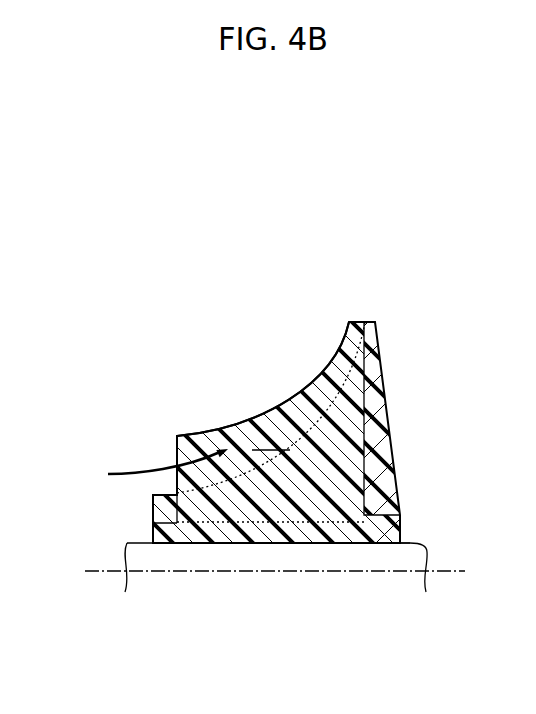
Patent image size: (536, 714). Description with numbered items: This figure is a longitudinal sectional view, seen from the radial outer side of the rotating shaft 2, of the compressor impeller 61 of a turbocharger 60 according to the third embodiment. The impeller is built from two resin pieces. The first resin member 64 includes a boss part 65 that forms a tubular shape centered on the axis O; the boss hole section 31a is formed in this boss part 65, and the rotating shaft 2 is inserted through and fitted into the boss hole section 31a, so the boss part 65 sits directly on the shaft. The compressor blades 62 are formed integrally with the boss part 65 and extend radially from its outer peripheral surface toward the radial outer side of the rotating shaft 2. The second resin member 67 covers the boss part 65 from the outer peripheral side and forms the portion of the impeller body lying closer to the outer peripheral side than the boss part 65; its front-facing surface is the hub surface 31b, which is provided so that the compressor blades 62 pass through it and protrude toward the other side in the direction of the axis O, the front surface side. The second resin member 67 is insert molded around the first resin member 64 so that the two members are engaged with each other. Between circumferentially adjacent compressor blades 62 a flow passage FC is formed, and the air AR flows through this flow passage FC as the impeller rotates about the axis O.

The turbocharger 60 is at (332, 265).
The compressor impeller 61 is at (279, 342).
The compressor blades 62 is at (228, 435).
The second resin member 67 is at (355, 452).
The hub surface 31b is at (176, 492).
The boss hole section 31a is at (357, 543).
The rotating shaft 2 is at (182, 560).
The first resin member 64 is at (258, 545).
The boss part 65 is at (318, 545).
The axis O is at (93, 573).
The air AR is at (142, 468).
The flow passage FC is at (271, 439).